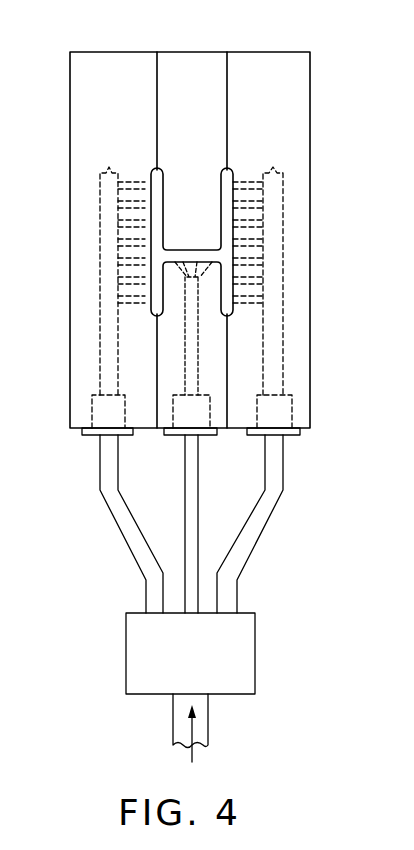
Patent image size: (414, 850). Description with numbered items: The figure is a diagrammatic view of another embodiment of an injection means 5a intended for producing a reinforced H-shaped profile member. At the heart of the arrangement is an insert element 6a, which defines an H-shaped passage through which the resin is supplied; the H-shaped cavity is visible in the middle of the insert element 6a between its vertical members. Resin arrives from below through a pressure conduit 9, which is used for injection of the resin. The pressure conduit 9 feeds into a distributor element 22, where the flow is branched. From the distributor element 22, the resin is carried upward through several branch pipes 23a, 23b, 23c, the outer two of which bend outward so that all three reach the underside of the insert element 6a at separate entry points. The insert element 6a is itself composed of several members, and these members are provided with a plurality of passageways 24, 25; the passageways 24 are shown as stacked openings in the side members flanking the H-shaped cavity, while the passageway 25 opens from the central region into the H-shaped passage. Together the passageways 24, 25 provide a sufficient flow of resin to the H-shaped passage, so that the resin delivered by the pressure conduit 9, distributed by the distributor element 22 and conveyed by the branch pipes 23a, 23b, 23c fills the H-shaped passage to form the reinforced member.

The injection means 5a is at (329, 82).
The insert element 6a is at (238, 39).
The pressure conduit 9 is at (177, 727).
The distributor element 22 is at (133, 652).
The branch pipe 23a is at (108, 463).
The branch pipe 23b is at (192, 502).
The branch pipe 23c is at (273, 480).
The passageways 24 is at (122, 207).
The passageway 25 is at (205, 267).